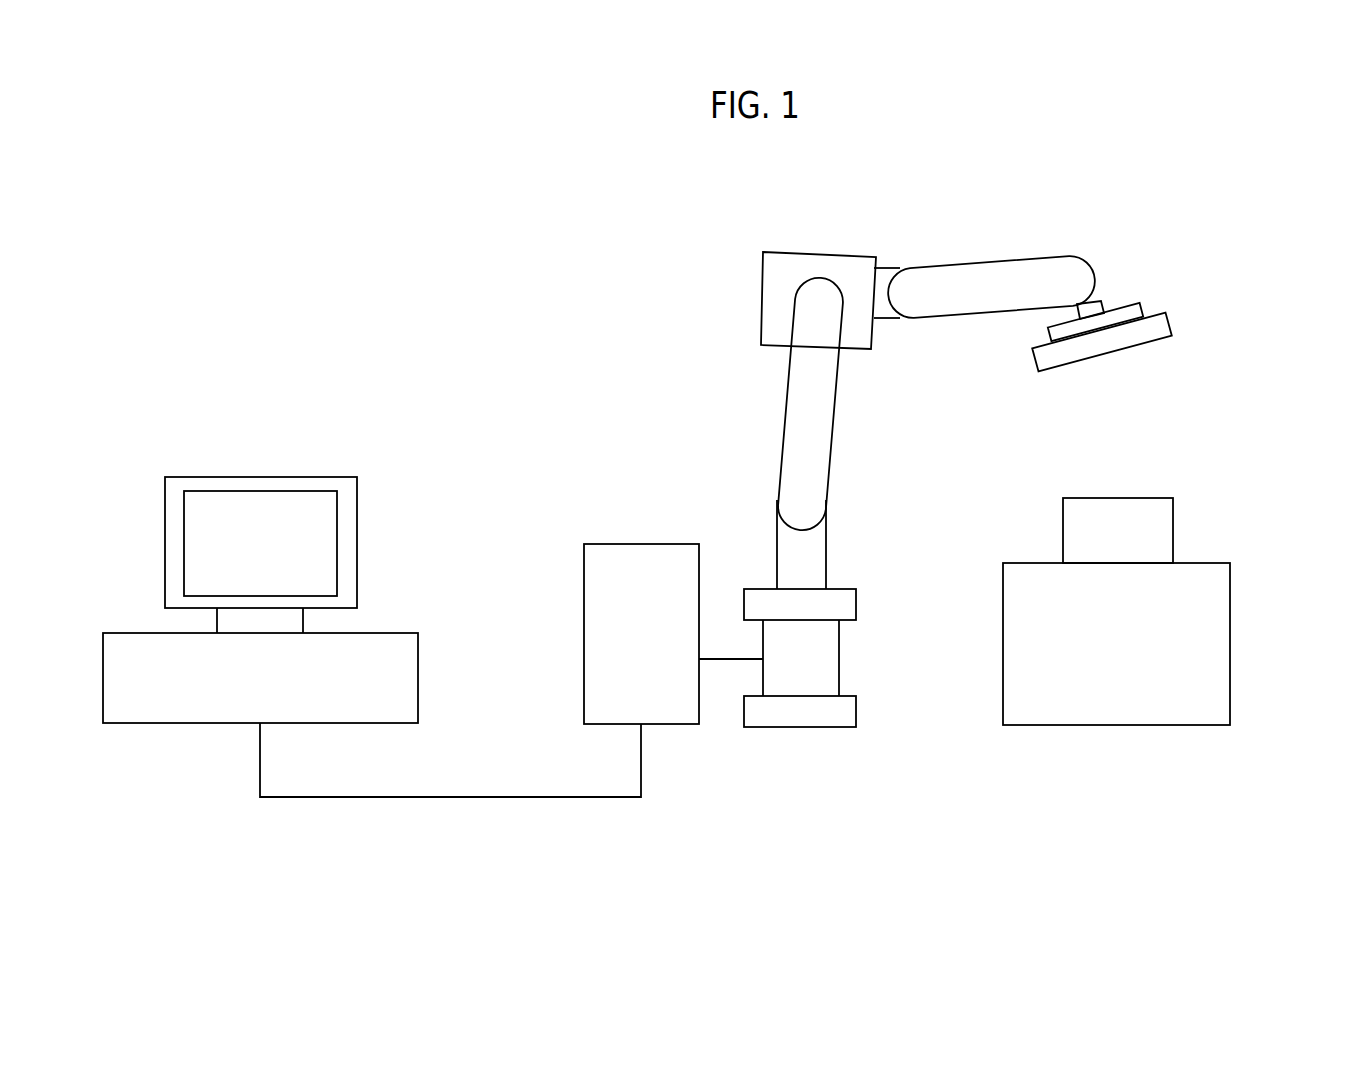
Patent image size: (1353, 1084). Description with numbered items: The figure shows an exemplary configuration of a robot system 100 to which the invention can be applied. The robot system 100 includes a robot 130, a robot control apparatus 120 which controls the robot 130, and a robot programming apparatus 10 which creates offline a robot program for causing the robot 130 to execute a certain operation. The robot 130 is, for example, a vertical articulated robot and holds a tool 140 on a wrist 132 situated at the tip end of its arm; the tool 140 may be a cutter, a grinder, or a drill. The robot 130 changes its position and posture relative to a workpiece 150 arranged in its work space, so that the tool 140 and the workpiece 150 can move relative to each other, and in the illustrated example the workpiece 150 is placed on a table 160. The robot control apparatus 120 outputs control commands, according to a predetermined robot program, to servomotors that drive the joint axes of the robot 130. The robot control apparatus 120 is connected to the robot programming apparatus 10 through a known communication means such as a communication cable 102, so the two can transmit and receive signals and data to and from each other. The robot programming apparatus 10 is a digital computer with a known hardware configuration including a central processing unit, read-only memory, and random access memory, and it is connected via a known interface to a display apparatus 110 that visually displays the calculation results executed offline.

The robot system 100 is at (541, 287).
The robot programming apparatus 10 is at (380, 550).
The display apparatus 110 is at (303, 477).
The communication cable 102 is at (502, 797).
The robot control apparatus 120 is at (640, 544).
The robot 130 is at (708, 288).
The wrist 132 is at (1103, 293).
The tool 140 is at (1062, 370).
The workpiece 150 is at (1173, 520).
The table 160 is at (1230, 587).